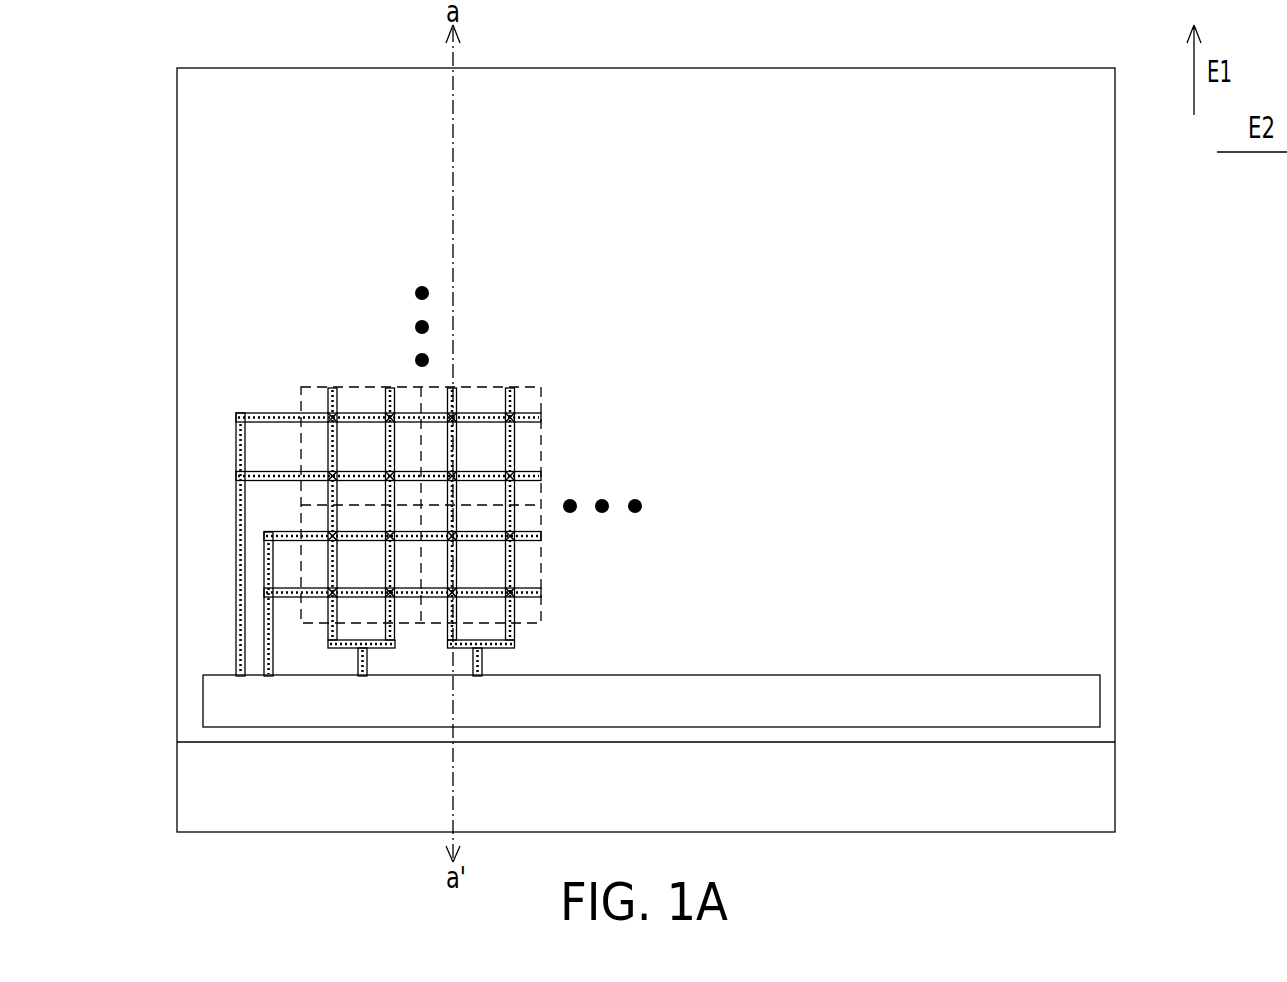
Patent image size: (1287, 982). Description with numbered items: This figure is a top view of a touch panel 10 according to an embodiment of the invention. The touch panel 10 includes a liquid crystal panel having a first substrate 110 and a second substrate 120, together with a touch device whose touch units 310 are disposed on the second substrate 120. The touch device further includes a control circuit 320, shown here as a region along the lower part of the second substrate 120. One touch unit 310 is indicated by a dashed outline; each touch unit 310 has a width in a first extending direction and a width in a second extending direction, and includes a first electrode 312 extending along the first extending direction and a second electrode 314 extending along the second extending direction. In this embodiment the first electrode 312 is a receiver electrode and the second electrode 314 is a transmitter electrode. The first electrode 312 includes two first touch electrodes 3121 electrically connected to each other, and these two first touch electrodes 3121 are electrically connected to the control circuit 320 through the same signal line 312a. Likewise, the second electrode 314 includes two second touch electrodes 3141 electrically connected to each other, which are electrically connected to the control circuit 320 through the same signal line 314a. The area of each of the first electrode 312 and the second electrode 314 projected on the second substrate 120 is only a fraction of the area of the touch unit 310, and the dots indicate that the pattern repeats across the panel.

The touch panel 10 is at (1282, 837).
The first substrate 110 is at (1055, 812).
The second substrate 120 is at (255, 139).
The touch unit 310 is at (300, 403).
The first electrode 312 is at (306, 472).
The first touch electrode 3121 is at (332, 390).
The signal line 312a is at (357, 663).
The second electrode 314 is at (390, 544).
The second touch electrode 3141 is at (530, 538).
The signal line 314a is at (237, 507).
The control circuit 320 is at (828, 717).